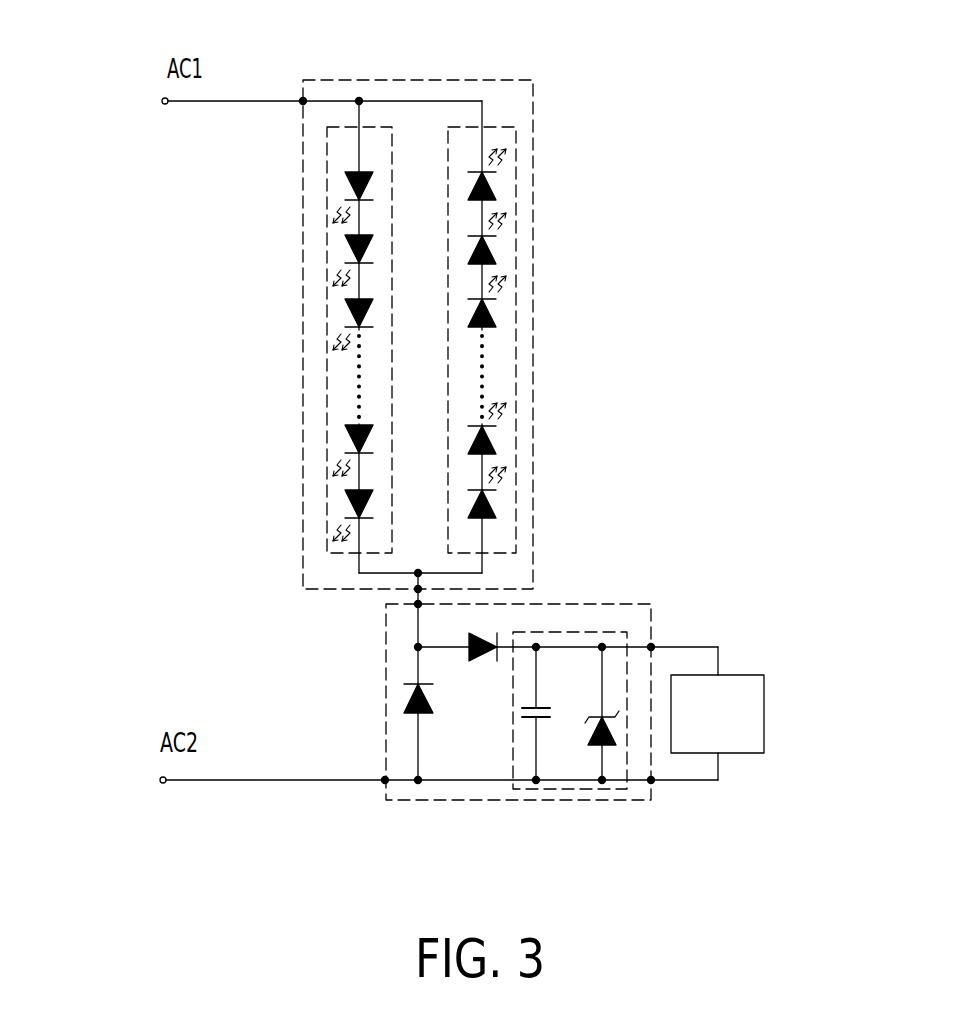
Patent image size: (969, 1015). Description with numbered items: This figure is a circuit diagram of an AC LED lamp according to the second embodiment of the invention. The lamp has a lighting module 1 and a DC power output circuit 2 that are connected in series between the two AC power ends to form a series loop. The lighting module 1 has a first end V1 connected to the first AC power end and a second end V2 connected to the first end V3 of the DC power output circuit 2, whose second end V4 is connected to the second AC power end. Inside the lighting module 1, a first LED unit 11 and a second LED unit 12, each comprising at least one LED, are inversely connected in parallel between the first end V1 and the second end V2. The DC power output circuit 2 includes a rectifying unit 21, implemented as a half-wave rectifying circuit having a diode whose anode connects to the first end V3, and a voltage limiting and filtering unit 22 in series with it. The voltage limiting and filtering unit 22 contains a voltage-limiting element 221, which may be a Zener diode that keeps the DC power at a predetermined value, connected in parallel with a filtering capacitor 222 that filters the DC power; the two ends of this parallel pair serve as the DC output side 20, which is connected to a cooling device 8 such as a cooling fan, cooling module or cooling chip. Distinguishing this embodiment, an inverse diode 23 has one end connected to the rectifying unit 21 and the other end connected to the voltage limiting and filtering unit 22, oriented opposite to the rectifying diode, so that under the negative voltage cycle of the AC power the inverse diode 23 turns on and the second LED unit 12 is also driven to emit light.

The lighting module 1 is at (533, 170).
The first LED unit 11 is at (373, 127).
The second LED unit 12 is at (475, 127).
The DC power output circuit 2 is at (600, 604).
The DC output side 20 is at (651, 645).
The rectifying unit 21 is at (468, 655).
The voltage limiting and filtering unit 22 is at (508, 722).
The voltage-limiting element 221 is at (606, 747).
The filtering capacitor 222 is at (547, 718).
The inverse diode 23 is at (405, 704).
The cooling device 8 is at (733, 678).
The first end of the lighting module V1 is at (303, 104).
The second end of the lighting module V2 is at (418, 588).
The first end of the DC power output circuit V3 is at (418, 605).
The second end of the DC power output circuit V4 is at (384, 782).